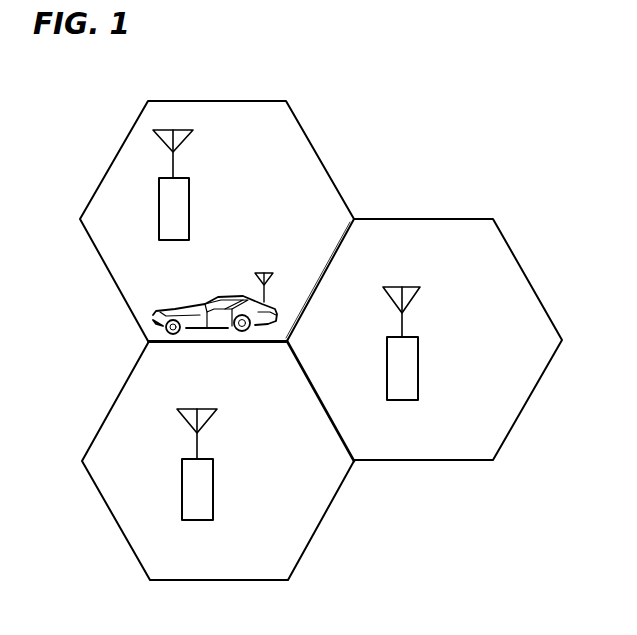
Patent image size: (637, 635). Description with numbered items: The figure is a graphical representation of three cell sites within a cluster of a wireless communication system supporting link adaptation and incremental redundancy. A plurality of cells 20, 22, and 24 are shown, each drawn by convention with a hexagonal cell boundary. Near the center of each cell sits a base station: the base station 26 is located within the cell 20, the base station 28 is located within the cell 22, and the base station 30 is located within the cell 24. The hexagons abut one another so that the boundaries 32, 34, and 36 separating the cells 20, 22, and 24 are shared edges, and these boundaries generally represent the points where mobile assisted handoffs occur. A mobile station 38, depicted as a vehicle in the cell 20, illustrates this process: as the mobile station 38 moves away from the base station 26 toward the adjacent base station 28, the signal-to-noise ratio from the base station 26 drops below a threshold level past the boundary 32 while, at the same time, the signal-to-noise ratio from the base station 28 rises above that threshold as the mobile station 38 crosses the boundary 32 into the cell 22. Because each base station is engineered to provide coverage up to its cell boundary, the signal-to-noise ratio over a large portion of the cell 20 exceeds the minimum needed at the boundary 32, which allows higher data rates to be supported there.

The cell 20 is at (320, 151).
The cell 22 is at (510, 242).
The cell 24 is at (333, 508).
The base station 26 is at (189, 204).
The base station 28 is at (418, 362).
The base station 30 is at (213, 485).
The boundary 32 is at (327, 276).
The boundary 34 is at (329, 409).
The boundary 36 is at (192, 346).
The mobile station 38 is at (232, 297).